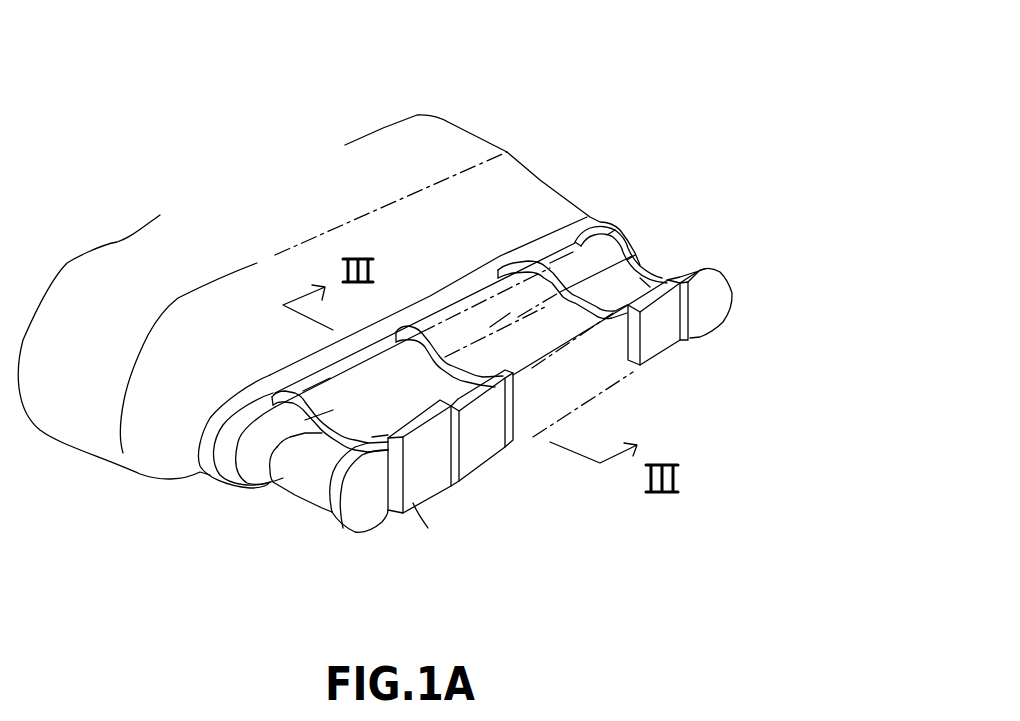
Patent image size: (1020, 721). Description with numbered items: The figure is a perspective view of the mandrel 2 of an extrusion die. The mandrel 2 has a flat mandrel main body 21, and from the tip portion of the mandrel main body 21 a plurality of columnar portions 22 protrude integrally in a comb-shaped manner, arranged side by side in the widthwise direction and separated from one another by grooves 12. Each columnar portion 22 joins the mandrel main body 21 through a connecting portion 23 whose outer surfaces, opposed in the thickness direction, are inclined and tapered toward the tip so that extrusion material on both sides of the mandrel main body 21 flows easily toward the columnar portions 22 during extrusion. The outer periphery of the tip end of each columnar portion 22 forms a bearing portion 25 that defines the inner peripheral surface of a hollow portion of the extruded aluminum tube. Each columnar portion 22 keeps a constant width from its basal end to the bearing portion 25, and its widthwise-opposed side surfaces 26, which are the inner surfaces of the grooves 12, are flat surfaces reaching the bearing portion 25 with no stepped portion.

The mandrel 2 is at (544, 65).
The groove 12 is at (457, 453).
The mandrel main body 21 is at (447, 147).
The columnar portion 22 is at (310, 483).
The connecting portion 23 is at (527, 197).
The bearing portion 25 is at (402, 433).
The side surface 26 is at (648, 283).